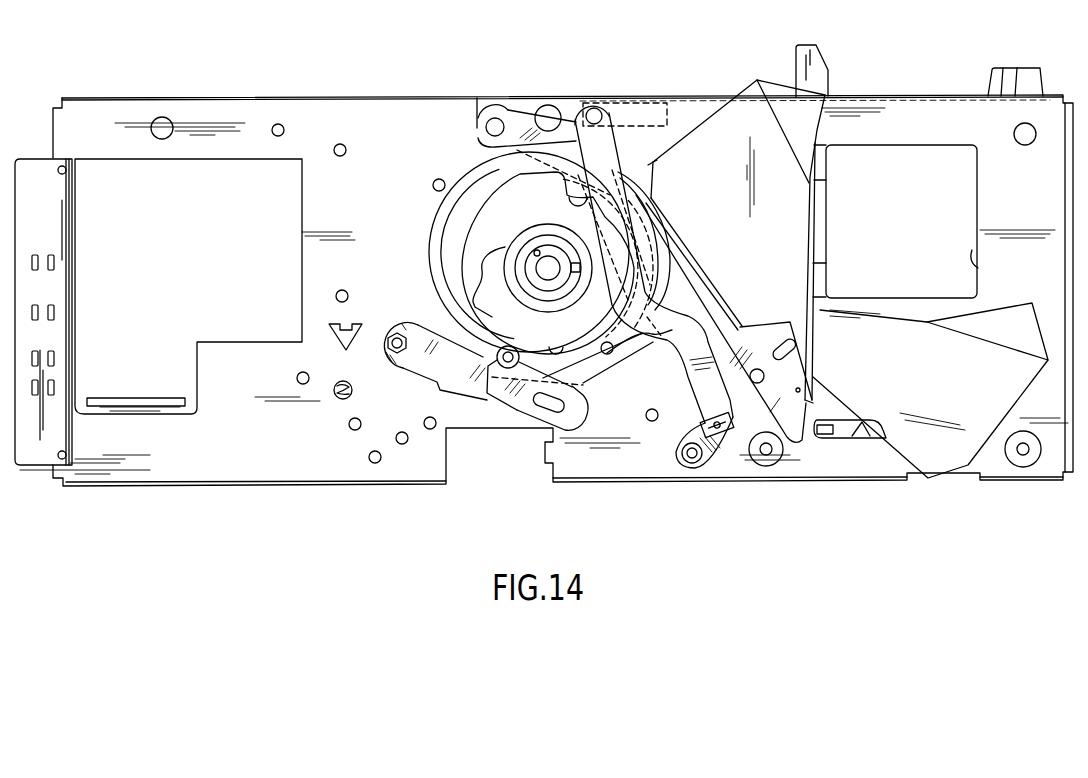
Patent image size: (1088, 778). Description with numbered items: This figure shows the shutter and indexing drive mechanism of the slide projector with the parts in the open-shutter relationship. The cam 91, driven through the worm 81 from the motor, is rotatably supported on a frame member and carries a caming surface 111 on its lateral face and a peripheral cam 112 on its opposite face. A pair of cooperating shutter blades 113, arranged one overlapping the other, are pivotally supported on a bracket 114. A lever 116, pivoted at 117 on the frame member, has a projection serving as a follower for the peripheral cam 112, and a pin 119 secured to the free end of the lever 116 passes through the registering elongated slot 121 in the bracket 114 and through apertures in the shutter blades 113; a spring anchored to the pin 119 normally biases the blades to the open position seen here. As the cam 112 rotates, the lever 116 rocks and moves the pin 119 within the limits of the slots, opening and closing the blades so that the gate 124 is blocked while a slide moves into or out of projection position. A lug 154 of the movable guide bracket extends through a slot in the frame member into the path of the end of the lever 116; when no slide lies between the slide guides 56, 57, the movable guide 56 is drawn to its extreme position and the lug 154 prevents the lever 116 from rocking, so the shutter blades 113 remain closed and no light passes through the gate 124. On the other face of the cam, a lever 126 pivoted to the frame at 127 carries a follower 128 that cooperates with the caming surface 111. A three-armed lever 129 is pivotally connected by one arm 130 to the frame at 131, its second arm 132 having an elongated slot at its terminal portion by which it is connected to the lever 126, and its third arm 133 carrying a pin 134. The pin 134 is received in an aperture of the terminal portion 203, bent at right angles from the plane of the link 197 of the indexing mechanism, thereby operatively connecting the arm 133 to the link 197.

The slide guide 56 is at (1010, 68).
The slide guide 57 is at (825, 50).
The worm 81 is at (535, 252).
The cam 91 is at (677, 257).
The caming surface 111 is at (468, 306).
The peripheral cam 112 is at (450, 260).
The shutter blades 113 is at (730, 194).
The bracket 114 is at (804, 323).
The lever 116 is at (690, 290).
The pivot 117 is at (486, 125).
The pin 119 is at (758, 384).
The elongated slot 121 is at (778, 346).
The gate 124 is at (978, 260).
The lever 126 is at (430, 378).
The pivot 127 is at (386, 348).
The follower 128 is at (480, 398).
The three-armed lever 129 is at (676, 334).
The arm 130 is at (700, 383).
The pivot 131 is at (688, 462).
The second arm 132 is at (585, 393).
The third arm 133 is at (655, 160).
The pin 134 is at (595, 108).
The lug 154 is at (826, 440).
The link 197 is at (685, 115).
The terminal portion 203 is at (640, 105).